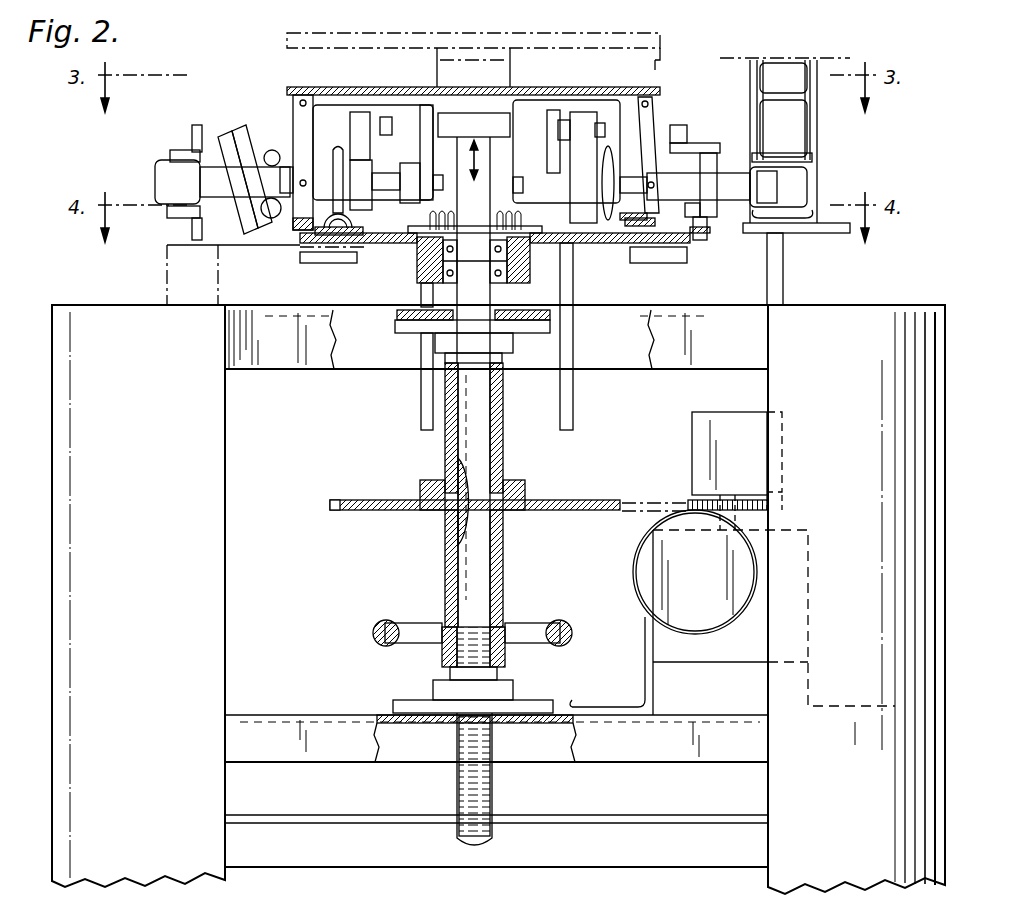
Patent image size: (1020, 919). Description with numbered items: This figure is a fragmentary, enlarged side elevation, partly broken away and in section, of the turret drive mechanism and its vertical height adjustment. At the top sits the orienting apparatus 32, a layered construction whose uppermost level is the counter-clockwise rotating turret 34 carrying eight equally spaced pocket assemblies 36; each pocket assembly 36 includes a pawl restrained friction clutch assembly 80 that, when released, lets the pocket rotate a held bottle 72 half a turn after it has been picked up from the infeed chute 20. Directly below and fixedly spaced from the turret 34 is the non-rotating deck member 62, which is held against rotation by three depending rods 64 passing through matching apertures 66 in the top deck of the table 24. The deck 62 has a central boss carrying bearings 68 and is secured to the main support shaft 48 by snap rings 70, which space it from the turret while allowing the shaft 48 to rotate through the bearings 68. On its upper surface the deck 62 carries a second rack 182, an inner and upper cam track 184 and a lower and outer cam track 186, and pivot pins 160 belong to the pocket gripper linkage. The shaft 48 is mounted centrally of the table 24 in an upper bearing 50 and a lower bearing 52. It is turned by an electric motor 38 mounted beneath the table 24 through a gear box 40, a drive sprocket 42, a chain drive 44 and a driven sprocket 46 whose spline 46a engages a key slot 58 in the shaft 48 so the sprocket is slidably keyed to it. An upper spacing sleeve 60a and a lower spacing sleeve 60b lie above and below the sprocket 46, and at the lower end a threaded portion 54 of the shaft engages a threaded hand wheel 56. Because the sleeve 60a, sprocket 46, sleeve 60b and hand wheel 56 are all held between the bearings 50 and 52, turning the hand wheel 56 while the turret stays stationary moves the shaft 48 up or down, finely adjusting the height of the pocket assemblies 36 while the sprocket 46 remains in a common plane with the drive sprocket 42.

The infeed chute 20 is at (818, 146).
The table 24 is at (852, 322).
The orienting apparatus 32 is at (288, 52).
The turret 34 is at (661, 92).
The pocket assemblies 36 is at (235, 143).
The electric motor 38 is at (640, 562).
The gear box 40 is at (716, 665).
The drive sprocket 42 is at (690, 503).
The chain drive 44 is at (635, 503).
The driven sprocket 46 is at (385, 500).
The spline 46a is at (455, 470).
The main support shaft 48 is at (470, 575).
The upper bearing 50 is at (505, 350).
The lower bearing 52 is at (518, 694).
The threaded portion 54 is at (492, 798).
The hand wheel 56 is at (376, 628).
The key slot 58 is at (462, 528).
The upper spacing sleeve 60a is at (503, 452).
The lower spacing sleeve 60b is at (503, 557).
The non-rotating deck member 62 is at (300, 245).
The depending rods 64 is at (420, 384).
The apertures 66 is at (590, 289).
The bearings 68 is at (418, 262).
The snap rings 70 is at (470, 245).
The bottle 72 is at (168, 167).
The friction clutch assembly 80 is at (372, 188).
The pivot pins 160 is at (706, 236).
The second rack 182 is at (318, 224).
The inner and upper cam track 184 is at (645, 222).
The lower and outer cam track 186 is at (683, 236).